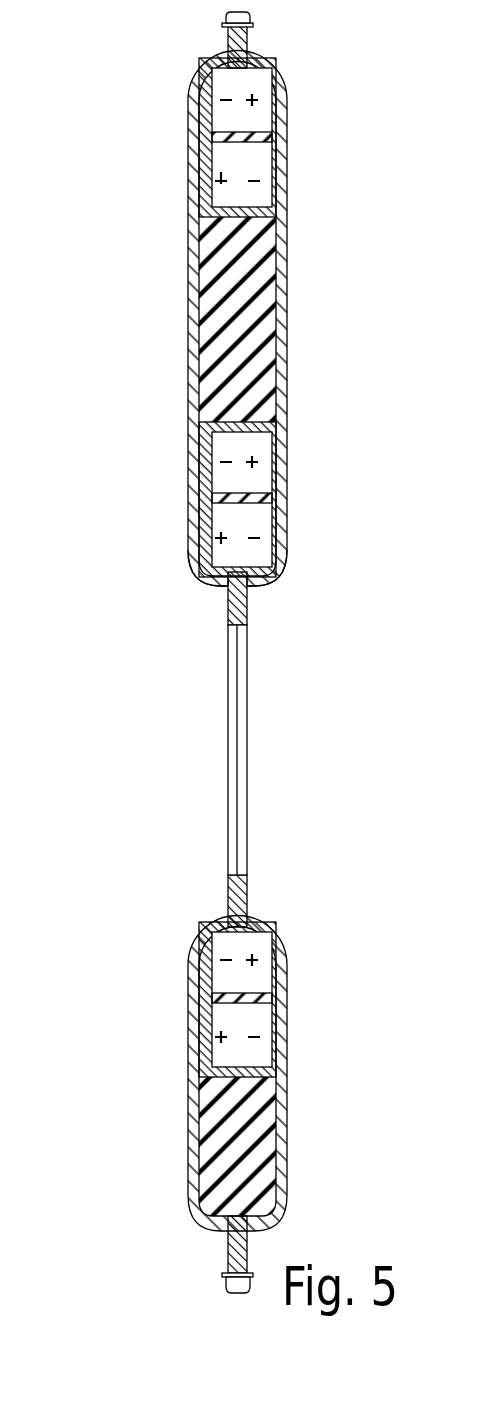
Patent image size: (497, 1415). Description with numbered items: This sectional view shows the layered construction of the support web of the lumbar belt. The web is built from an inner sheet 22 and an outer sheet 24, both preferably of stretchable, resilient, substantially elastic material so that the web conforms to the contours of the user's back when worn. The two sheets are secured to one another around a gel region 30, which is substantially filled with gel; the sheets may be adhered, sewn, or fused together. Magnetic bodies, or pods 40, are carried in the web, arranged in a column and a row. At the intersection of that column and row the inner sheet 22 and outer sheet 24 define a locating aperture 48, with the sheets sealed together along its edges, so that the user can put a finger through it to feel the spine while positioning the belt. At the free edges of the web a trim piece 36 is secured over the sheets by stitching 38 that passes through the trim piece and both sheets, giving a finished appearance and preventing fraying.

The inner sheet 22 is at (277, 576).
The outer sheet 24 is at (198, 575).
The gel region 30 is at (210, 1122).
The trim piece 36 is at (228, 13).
The stitching 38 is at (252, 25).
The magnetic pods 40 is at (207, 130).
The locating aperture 48 is at (226, 752).